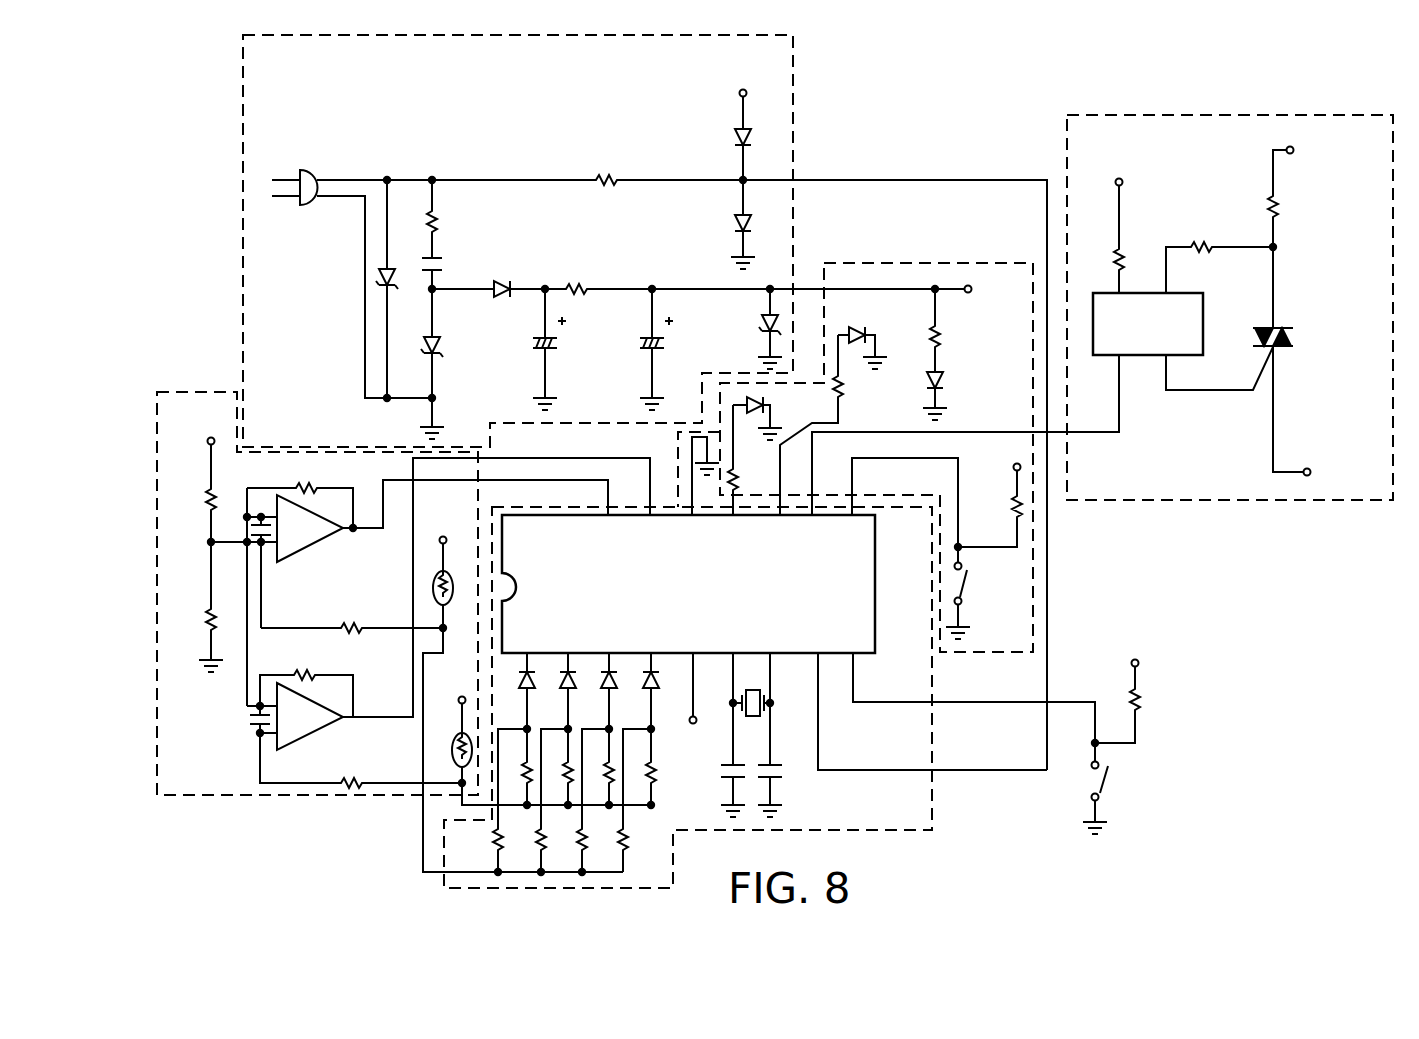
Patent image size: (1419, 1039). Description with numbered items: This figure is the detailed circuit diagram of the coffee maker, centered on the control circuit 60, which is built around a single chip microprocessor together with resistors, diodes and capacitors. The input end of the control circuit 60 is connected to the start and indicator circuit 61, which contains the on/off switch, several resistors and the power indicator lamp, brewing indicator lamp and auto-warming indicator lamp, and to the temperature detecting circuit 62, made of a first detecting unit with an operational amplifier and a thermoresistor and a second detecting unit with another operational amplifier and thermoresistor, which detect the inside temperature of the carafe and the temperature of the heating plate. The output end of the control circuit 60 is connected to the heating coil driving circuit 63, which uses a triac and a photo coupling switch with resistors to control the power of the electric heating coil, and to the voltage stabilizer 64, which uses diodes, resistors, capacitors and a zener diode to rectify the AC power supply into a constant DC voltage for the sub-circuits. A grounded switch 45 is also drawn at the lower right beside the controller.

The voltage stabilizer 64 is at (770, 103).
The start and indicator circuit 61 is at (918, 280).
The heating coil driving circuit 63 is at (1190, 460).
The temperature detecting circuit 62 is at (244, 768).
The control circuit 60 is at (900, 802).
The switch 45 is at (1107, 783).